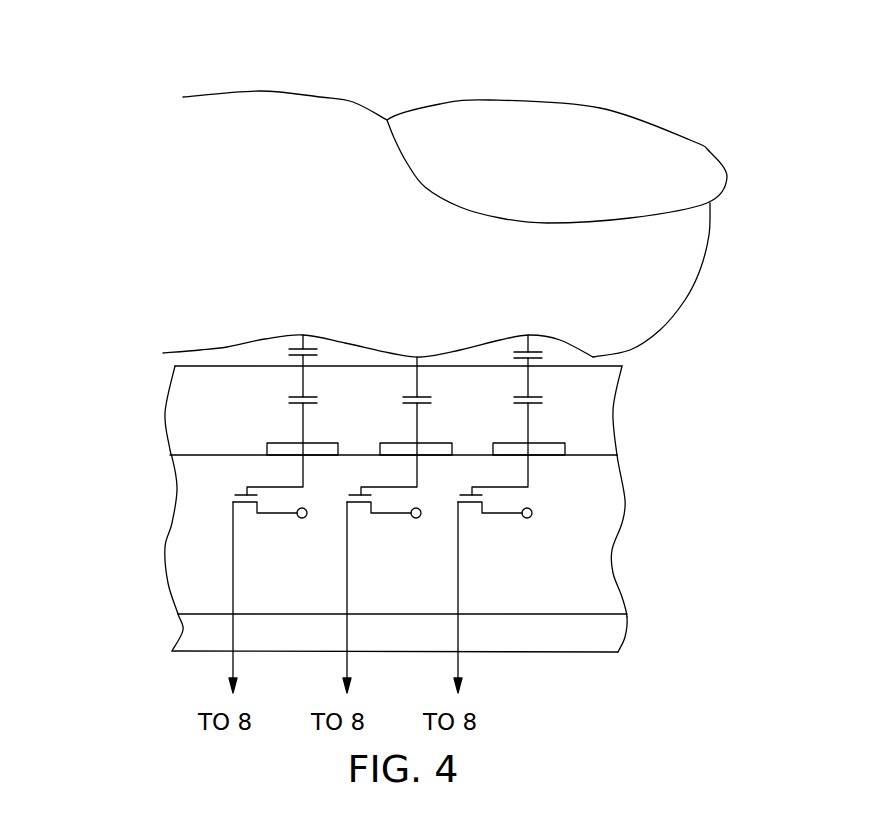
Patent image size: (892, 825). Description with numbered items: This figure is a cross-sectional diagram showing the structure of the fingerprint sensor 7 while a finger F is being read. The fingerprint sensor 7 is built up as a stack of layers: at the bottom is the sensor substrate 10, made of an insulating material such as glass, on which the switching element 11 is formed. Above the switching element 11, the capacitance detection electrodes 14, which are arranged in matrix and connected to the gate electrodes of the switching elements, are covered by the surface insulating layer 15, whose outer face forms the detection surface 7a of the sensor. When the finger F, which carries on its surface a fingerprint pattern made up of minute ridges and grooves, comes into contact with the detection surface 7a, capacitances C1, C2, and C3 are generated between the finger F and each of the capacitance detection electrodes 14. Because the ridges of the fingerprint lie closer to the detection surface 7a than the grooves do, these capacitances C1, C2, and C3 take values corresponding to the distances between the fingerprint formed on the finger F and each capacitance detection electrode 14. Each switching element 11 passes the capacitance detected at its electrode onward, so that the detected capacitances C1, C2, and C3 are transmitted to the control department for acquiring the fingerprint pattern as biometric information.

The finger F is at (333, 133).
The fingerprint sensor 7 is at (693, 378).
The detection surface 7a is at (220, 363).
The surface insulating layer 15 is at (183, 393).
The capacitance detection electrode 14 is at (263, 447).
The switching element 11 is at (233, 538).
The sensor substrate 10 is at (185, 632).
The capacitance C1 is at (447, 402).
The capacitance C2 is at (334, 353).
The capacitance C3 is at (562, 355).